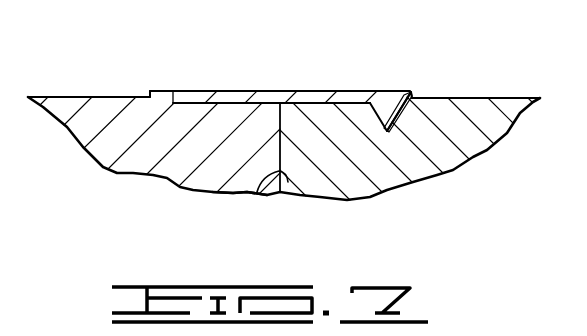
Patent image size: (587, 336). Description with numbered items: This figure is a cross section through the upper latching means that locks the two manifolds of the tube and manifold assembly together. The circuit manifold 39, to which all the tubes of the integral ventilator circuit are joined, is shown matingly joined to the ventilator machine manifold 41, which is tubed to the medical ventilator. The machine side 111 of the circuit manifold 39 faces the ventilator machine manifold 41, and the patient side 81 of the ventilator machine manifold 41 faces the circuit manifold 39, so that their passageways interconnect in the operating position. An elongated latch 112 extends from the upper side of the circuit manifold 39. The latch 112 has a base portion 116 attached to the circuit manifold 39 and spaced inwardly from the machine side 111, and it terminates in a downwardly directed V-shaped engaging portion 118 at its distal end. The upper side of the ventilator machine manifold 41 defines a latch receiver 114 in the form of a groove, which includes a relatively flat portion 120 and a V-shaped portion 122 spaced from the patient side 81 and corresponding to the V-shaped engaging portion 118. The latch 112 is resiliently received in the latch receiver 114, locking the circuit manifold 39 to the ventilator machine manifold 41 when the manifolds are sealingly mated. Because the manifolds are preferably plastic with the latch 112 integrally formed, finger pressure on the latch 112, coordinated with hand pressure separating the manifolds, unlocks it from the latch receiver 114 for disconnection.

The circuit manifold 39 is at (67, 106).
The ventilator machine manifold 41 is at (472, 113).
The patient side 81 is at (243, 193).
The machine side 111 is at (288, 182).
The latch 112 is at (233, 93).
The latch receiver 114 is at (327, 69).
The base portion 116 is at (162, 93).
The V-shaped engaging portion 118 is at (390, 107).
The relatively flat portion 120 is at (317, 100).
The V-shaped portion 122 is at (393, 107).